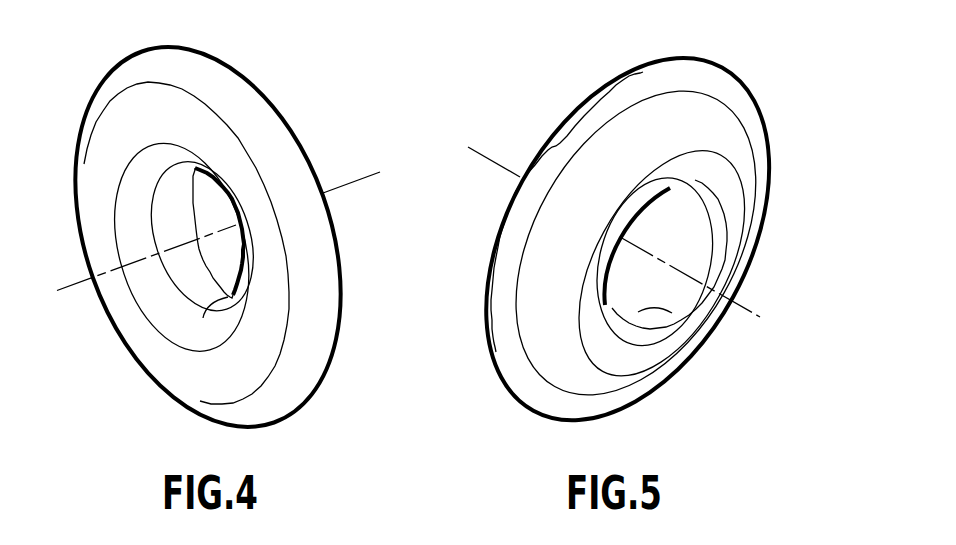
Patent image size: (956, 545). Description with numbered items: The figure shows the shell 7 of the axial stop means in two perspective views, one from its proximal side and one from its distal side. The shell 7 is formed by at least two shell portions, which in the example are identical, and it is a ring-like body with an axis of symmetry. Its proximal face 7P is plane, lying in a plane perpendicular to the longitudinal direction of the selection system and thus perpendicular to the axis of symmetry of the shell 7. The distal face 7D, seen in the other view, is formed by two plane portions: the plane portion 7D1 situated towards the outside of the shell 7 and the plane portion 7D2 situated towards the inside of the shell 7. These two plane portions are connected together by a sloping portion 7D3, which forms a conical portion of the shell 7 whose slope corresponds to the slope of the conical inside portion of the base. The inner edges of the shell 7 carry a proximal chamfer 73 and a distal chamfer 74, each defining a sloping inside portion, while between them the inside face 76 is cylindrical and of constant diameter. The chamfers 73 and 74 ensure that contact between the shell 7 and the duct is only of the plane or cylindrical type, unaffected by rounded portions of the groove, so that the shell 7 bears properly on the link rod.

In FIG. 4, the shell 7 is at (100, 163).
In FIG. 5, the shell 7 is at (533, 150).
In FIG. 4, the proximal face 7P is at (162, 345).
In FIG. 4, the chamfer 73 is at (176, 310).
In FIG. 4, the inside face 76 is at (203, 318).
In FIG. 5, the inside face 76 is at (672, 313).
In FIG. 5, the distal face 7D is at (726, 90).
In FIG. 5, the plane portion 7D1 is at (628, 97).
In FIG. 5, the sloping portion 7D3 is at (717, 143).
In FIG. 5, the plane portion 7D2 is at (730, 183).
In FIG. 5, the chamfer 74 is at (720, 233).